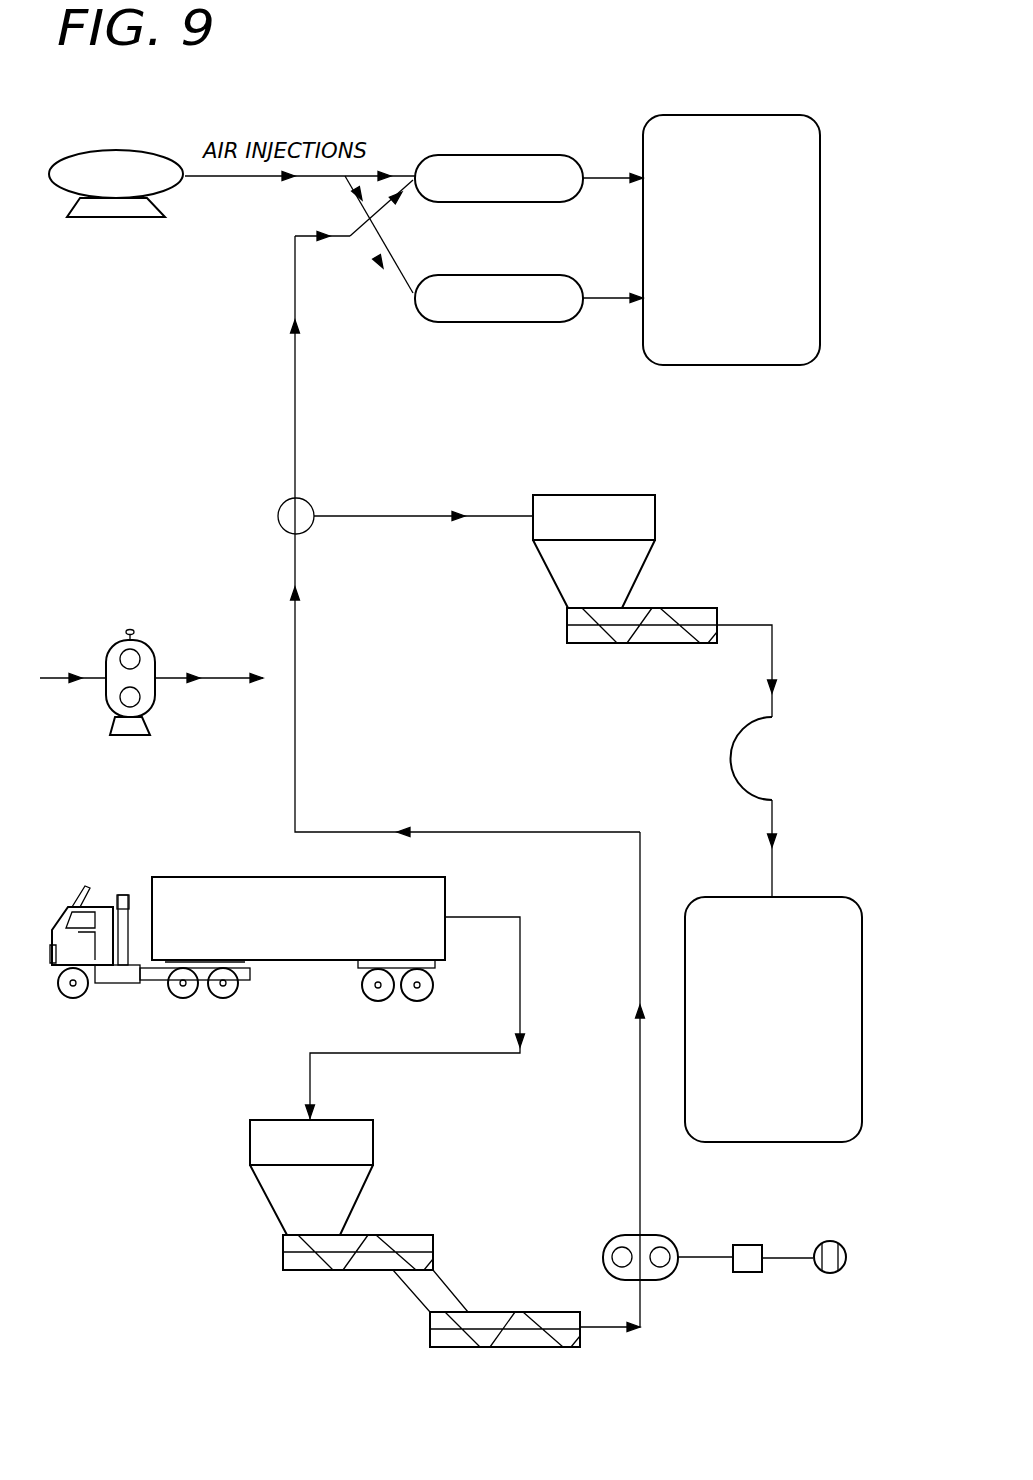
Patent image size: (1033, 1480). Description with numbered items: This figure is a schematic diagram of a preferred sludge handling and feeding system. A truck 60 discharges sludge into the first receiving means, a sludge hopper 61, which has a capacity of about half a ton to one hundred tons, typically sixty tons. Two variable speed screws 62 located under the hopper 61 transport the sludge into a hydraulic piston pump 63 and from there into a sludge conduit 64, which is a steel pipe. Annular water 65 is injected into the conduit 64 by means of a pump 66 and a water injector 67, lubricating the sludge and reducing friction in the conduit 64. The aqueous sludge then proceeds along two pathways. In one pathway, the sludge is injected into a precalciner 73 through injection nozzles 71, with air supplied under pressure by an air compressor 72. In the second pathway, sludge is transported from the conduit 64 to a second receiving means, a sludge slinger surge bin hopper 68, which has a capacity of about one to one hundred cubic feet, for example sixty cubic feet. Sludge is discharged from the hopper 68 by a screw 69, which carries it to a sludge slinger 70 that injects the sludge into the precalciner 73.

The truck 60 is at (172, 895).
The sludge hopper 61 is at (368, 1138).
The variable speed screws 62 is at (395, 1235).
The hydraulic piston pump 63 is at (653, 1280).
The sludge conduit 64 is at (640, 1118).
The annular water 65 is at (70, 628).
The pump 66 is at (143, 647).
The water injector 67 is at (253, 688).
The sludge slinger surge bin hopper 68 is at (650, 510).
The screw 69 is at (717, 613).
The sludge slinger 70 is at (775, 756).
The injection nozzles 71 is at (475, 155).
The air compressor 72 is at (120, 150).
The precalciner 73 is at (807, 243).